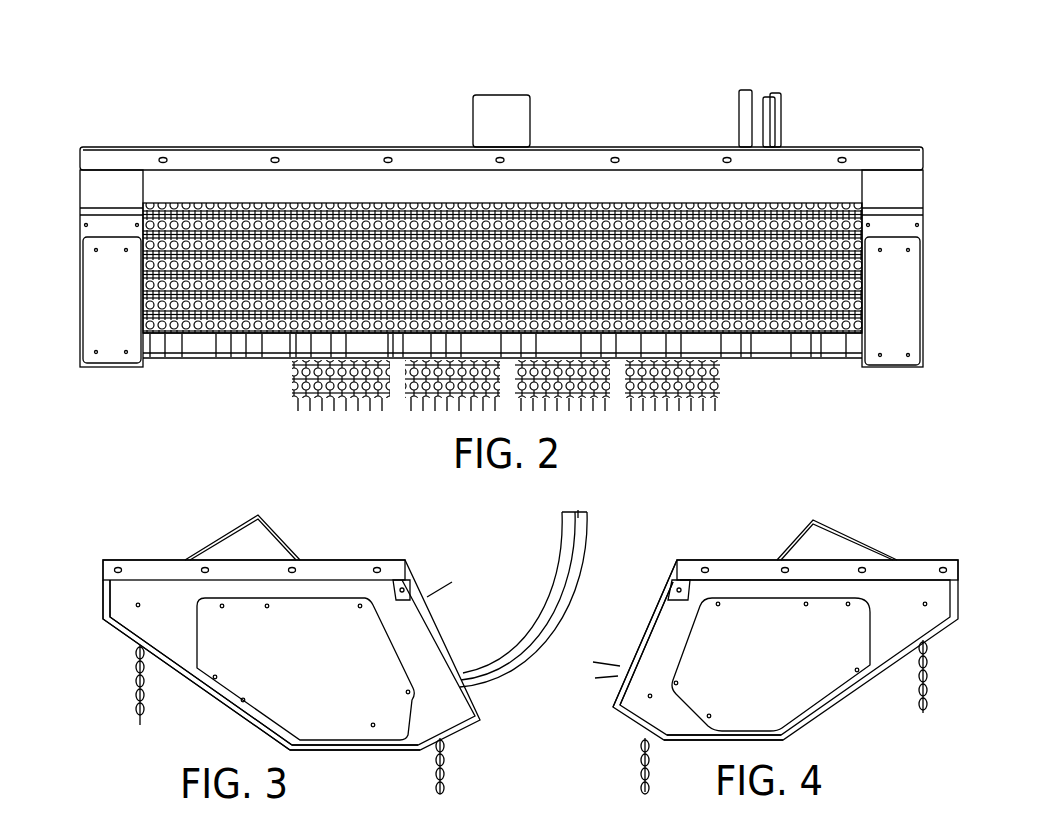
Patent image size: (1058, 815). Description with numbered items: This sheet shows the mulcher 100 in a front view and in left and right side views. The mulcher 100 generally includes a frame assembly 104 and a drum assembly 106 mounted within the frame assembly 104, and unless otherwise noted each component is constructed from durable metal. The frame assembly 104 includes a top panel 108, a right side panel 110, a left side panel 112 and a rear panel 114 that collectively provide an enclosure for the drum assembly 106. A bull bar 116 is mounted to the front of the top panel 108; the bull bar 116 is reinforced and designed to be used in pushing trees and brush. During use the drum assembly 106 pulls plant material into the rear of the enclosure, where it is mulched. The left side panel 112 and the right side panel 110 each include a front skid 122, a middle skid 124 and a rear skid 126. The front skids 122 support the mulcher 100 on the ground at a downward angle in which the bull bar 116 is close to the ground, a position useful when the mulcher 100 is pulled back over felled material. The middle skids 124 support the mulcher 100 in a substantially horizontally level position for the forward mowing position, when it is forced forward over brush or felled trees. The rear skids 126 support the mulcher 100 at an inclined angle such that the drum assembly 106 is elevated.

In FIG. 2, the mulcher 100 is at (502, 236).
In FIG. 3, the mulcher 100 is at (332, 633).
In FIG. 4, the mulcher 100 is at (751, 612).
In FIG. 2, the frame assembly 104 is at (686, 123).
In FIG. 2, the drum assembly 106 is at (248, 342).
In FIG. 3, the top panel 108 is at (165, 572).
In FIG. 4, the top panel 108 is at (752, 570).
In FIG. 3, the right side panel 110 is at (242, 537).
In FIG. 4, the right side panel 110 is at (815, 593).
In FIG. 3, the left side panel 112 is at (118, 608).
In FIG. 3, the rear panel 114 is at (440, 628).
In FIG. 4, the rear panel 114 is at (657, 607).
In FIG. 2, the bull bar 116 is at (252, 203).
In FIG. 2, the front skid 122 is at (118, 280).
In FIG. 3, the front skid 122 is at (213, 698).
In FIG. 4, the front skid 122 is at (865, 677).
In FIG. 3, the middle skid 124 is at (317, 752).
In FIG. 4, the middle skid 124 is at (693, 736).
In FIG. 3, the rear skid 126 is at (450, 723).
In FIG. 4, the rear skid 126 is at (637, 717).